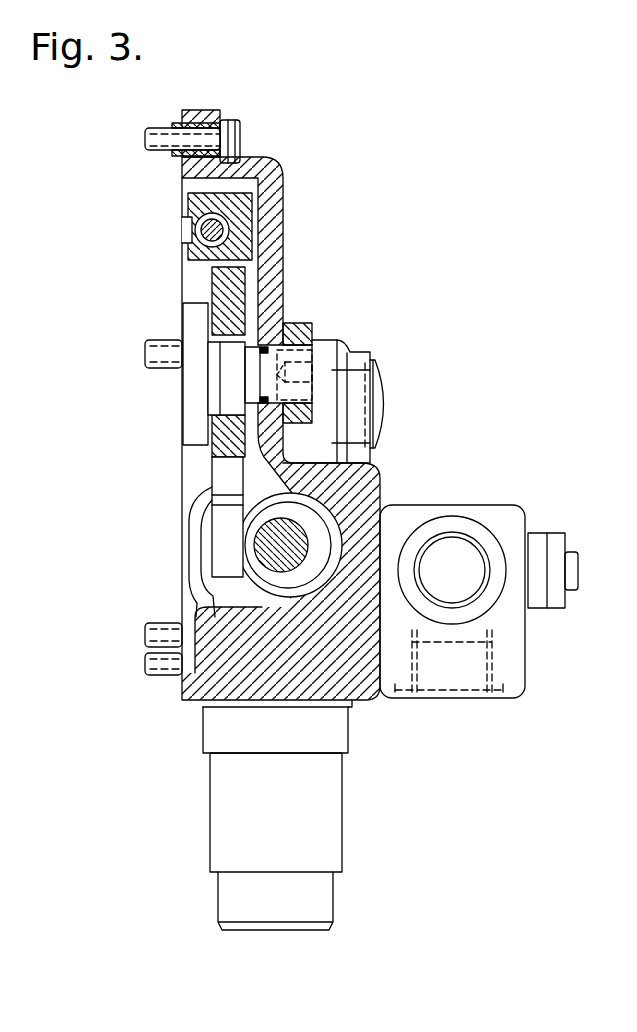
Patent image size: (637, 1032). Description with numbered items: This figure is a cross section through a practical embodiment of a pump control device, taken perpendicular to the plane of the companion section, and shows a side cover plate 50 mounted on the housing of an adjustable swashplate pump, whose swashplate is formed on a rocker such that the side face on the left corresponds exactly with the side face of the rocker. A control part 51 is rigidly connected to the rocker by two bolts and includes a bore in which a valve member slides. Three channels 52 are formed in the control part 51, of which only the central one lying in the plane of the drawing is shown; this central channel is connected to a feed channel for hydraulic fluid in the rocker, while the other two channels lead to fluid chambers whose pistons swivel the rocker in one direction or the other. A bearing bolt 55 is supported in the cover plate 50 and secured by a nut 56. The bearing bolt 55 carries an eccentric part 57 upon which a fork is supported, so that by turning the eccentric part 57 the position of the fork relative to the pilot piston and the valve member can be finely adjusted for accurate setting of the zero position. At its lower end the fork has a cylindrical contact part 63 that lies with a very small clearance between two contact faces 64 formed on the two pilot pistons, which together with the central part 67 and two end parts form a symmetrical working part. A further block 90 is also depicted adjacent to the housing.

The side cover plate 50 is at (277, 240).
The control part 51 is at (202, 198).
The channels 52 is at (187, 229).
The bearing bolt 55 is at (248, 383).
The nut 56 is at (303, 323).
The eccentric part 57 is at (228, 368).
The cylindrical contact part 63 is at (223, 542).
The contact faces 64 is at (262, 518).
The central part 67 is at (267, 553).
The valve block 90 is at (515, 668).